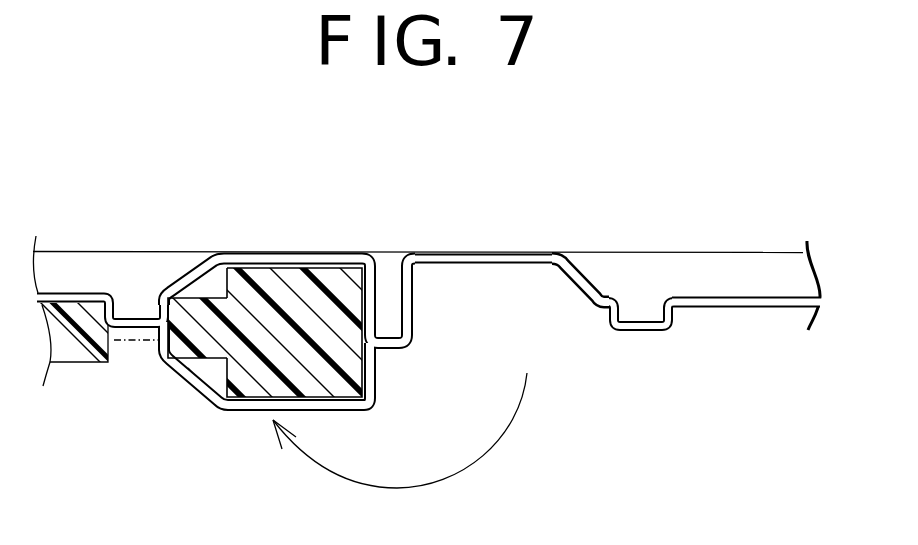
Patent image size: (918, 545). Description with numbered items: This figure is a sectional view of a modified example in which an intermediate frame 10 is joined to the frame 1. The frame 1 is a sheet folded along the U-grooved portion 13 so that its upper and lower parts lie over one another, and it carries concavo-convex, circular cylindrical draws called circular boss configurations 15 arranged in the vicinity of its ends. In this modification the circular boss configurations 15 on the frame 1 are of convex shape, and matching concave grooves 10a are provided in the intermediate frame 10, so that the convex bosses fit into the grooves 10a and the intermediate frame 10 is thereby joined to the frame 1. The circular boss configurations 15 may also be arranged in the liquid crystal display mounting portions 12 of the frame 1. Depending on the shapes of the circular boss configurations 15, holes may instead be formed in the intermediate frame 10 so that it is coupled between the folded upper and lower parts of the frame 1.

The frame 1 is at (612, 273).
The intermediate frame 10 is at (278, 300).
The concave grooves 10a is at (185, 360).
The liquid crystal display mounting portions 12 is at (720, 297).
The U-grooved portion 13 is at (388, 282).
The circular boss configurations 15 is at (137, 304).